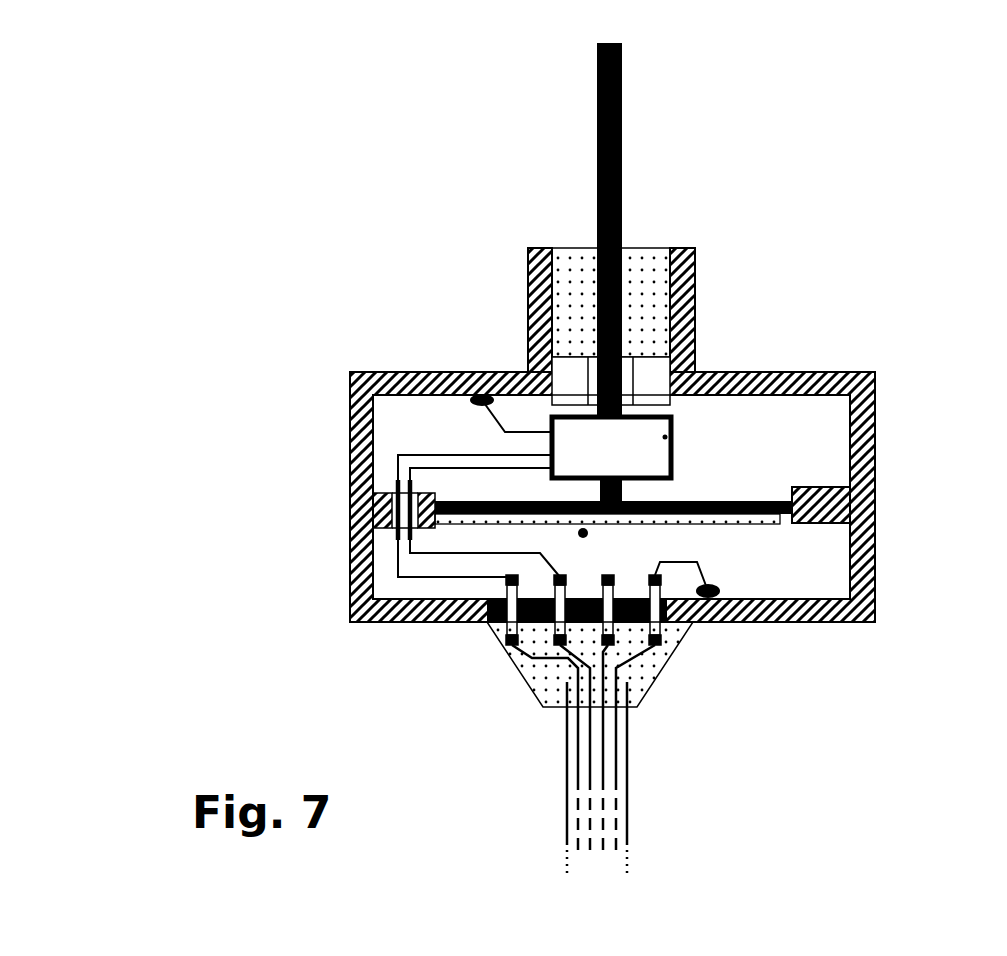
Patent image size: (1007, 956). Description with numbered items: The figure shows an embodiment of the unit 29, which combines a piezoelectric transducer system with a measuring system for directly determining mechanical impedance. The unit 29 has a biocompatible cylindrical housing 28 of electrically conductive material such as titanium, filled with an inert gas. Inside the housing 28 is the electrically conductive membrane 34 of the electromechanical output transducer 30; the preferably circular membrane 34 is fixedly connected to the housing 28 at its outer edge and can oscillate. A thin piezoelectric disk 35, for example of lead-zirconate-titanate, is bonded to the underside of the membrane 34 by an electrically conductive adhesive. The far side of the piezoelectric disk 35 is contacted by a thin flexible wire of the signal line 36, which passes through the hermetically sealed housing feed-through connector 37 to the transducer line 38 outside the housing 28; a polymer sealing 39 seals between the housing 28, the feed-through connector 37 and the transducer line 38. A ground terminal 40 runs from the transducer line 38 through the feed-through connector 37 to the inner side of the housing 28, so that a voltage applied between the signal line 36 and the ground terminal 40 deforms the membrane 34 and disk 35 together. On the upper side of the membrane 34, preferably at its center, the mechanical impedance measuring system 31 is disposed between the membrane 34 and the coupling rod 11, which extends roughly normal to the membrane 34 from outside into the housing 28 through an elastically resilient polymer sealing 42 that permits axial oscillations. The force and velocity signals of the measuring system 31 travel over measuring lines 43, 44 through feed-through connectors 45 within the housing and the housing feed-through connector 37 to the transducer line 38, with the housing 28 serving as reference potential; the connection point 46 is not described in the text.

The coupling rod 11 is at (622, 118).
The housing 28 is at (860, 427).
The unit 29 is at (410, 255).
The electromechanical output transducer 30 is at (718, 488).
The mechanical impedance measuring system 31 is at (665, 437).
The membrane 34 is at (750, 500).
The piezoelectric disk 35 is at (773, 520).
The signal line 36 is at (583, 535).
The housing feed-through connector 37 is at (676, 644).
The transducer line 38 is at (627, 812).
The polymer sealing 39 is at (648, 678).
The ground terminal 40 is at (706, 582).
The polymer sealing 42 is at (637, 258).
The measuring line 43 is at (415, 455).
The measuring line 44 is at (452, 468).
The feed-through connectors 45 is at (393, 513).
The connection point 46 is at (483, 400).